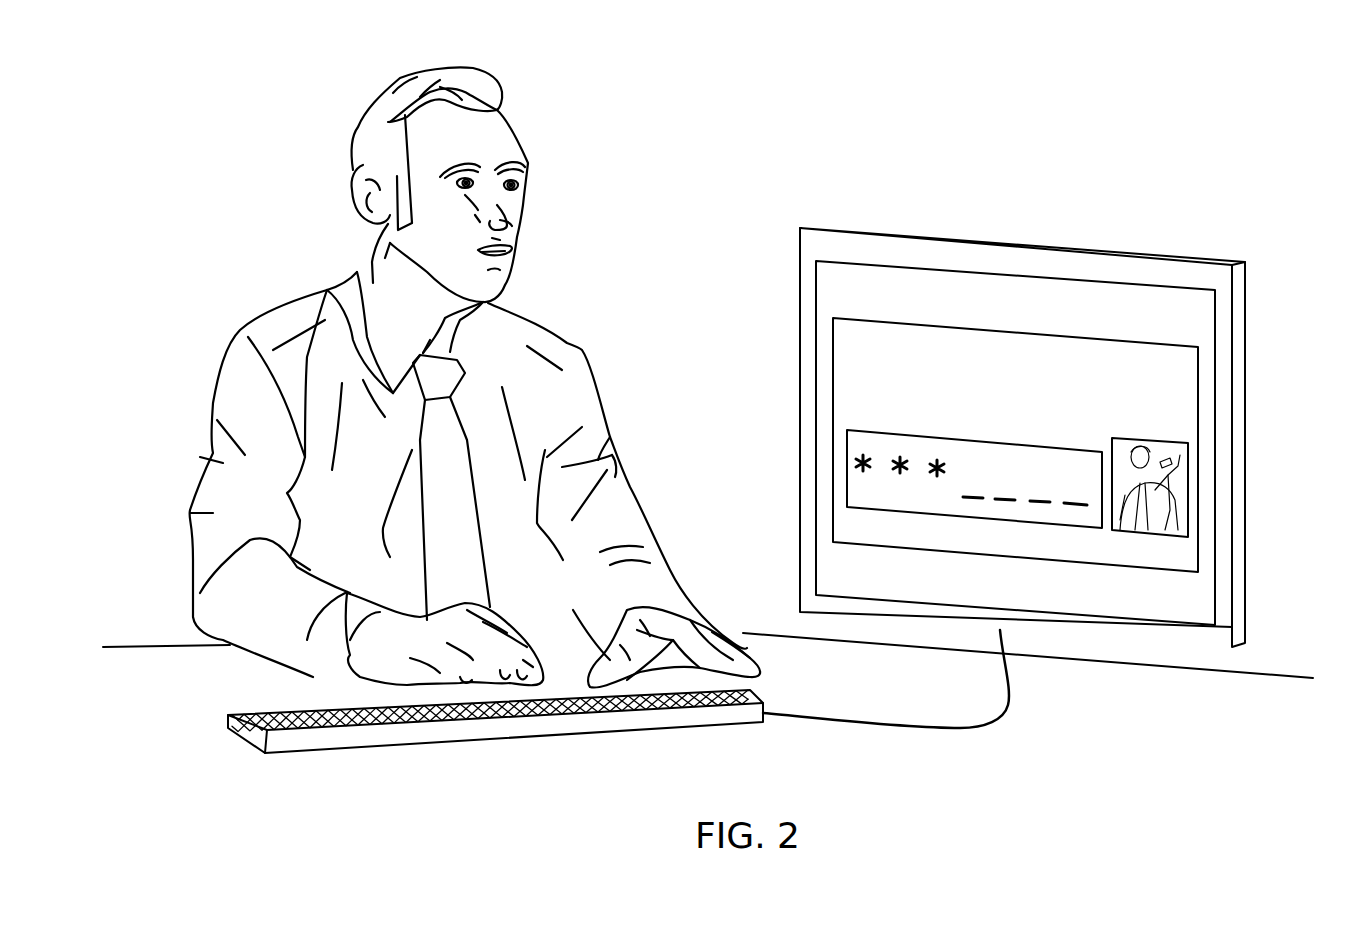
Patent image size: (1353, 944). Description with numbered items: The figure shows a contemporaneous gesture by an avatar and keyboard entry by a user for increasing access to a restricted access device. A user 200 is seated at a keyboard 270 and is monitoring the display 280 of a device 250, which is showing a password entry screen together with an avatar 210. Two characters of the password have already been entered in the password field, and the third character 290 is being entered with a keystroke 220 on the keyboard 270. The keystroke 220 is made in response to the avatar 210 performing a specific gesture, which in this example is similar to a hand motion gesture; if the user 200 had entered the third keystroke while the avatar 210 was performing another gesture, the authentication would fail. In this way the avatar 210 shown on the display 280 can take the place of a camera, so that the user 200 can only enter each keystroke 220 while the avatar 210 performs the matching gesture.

The user 200 is at (587, 370).
The avatar 210 is at (1180, 487).
The keystroke 220 is at (670, 660).
The device 250 is at (1208, 237).
The keyboard 270 is at (460, 740).
The display 280 is at (1198, 385).
The third character 290 is at (947, 463).